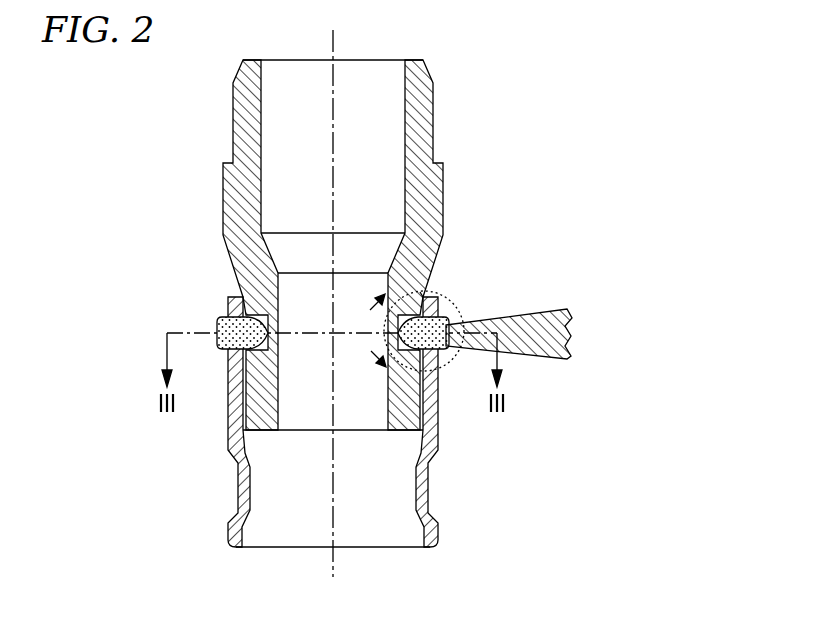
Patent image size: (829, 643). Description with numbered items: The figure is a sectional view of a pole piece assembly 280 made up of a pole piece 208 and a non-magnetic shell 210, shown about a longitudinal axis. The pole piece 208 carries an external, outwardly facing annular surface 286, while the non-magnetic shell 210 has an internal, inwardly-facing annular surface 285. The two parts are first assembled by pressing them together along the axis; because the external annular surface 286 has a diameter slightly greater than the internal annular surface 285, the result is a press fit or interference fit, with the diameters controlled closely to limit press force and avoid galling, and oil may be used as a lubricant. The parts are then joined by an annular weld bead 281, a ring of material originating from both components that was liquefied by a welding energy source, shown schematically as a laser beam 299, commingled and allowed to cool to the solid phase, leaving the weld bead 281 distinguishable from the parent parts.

The pole piece assembly 280 is at (488, 58).
The pole piece 208 is at (445, 186).
The non-magnetic shell 210 is at (436, 452).
The weld bead 281 is at (450, 312).
The internal annular surface 285 is at (420, 443).
The external annular surface 286 is at (421, 291).
The laser beam 299 is at (567, 345).